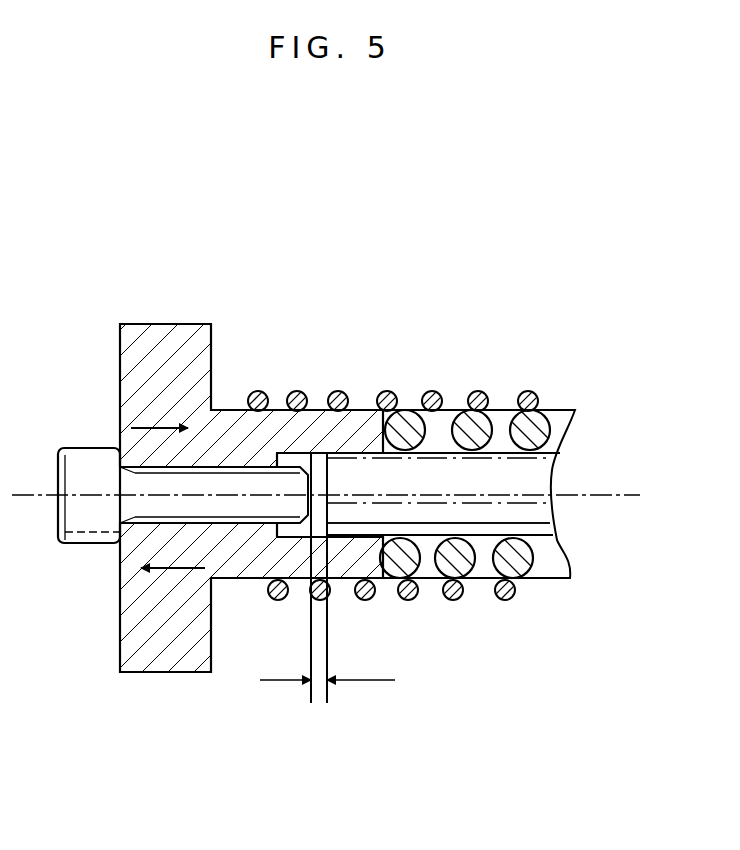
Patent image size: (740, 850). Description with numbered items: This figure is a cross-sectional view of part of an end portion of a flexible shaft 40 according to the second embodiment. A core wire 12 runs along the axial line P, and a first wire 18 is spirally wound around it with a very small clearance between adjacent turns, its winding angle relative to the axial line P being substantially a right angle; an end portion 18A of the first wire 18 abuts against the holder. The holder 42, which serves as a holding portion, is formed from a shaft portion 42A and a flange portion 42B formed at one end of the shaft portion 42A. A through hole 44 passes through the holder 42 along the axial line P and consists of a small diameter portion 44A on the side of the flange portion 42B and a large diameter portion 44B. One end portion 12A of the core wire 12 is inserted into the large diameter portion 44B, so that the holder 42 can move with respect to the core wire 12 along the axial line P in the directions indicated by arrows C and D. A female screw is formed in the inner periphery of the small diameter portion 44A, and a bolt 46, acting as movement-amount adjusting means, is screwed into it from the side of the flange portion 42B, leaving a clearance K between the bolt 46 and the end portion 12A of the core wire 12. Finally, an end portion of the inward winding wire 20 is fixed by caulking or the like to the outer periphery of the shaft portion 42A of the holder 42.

The core wire 12 is at (540, 540).
The end portion of the core wire 12A is at (475, 510).
The first wire 18 is at (550, 408).
The end portion of the first wire 18A is at (340, 580).
The inward winding wire 20 is at (340, 392).
The flexible shaft 40 is at (484, 333).
The holder 42 is at (172, 300).
The shaft portion 42A is at (233, 409).
The flange portion 42B is at (140, 323).
The through hole 44 is at (182, 623).
The small diameter portion 44A is at (168, 523).
The large diameter portion 44B is at (277, 538).
The bolt 46 is at (78, 455).
The clearance K is at (316, 690).
The axial line P is at (584, 493).
The arrow C is at (155, 425).
The arrow D is at (170, 578).